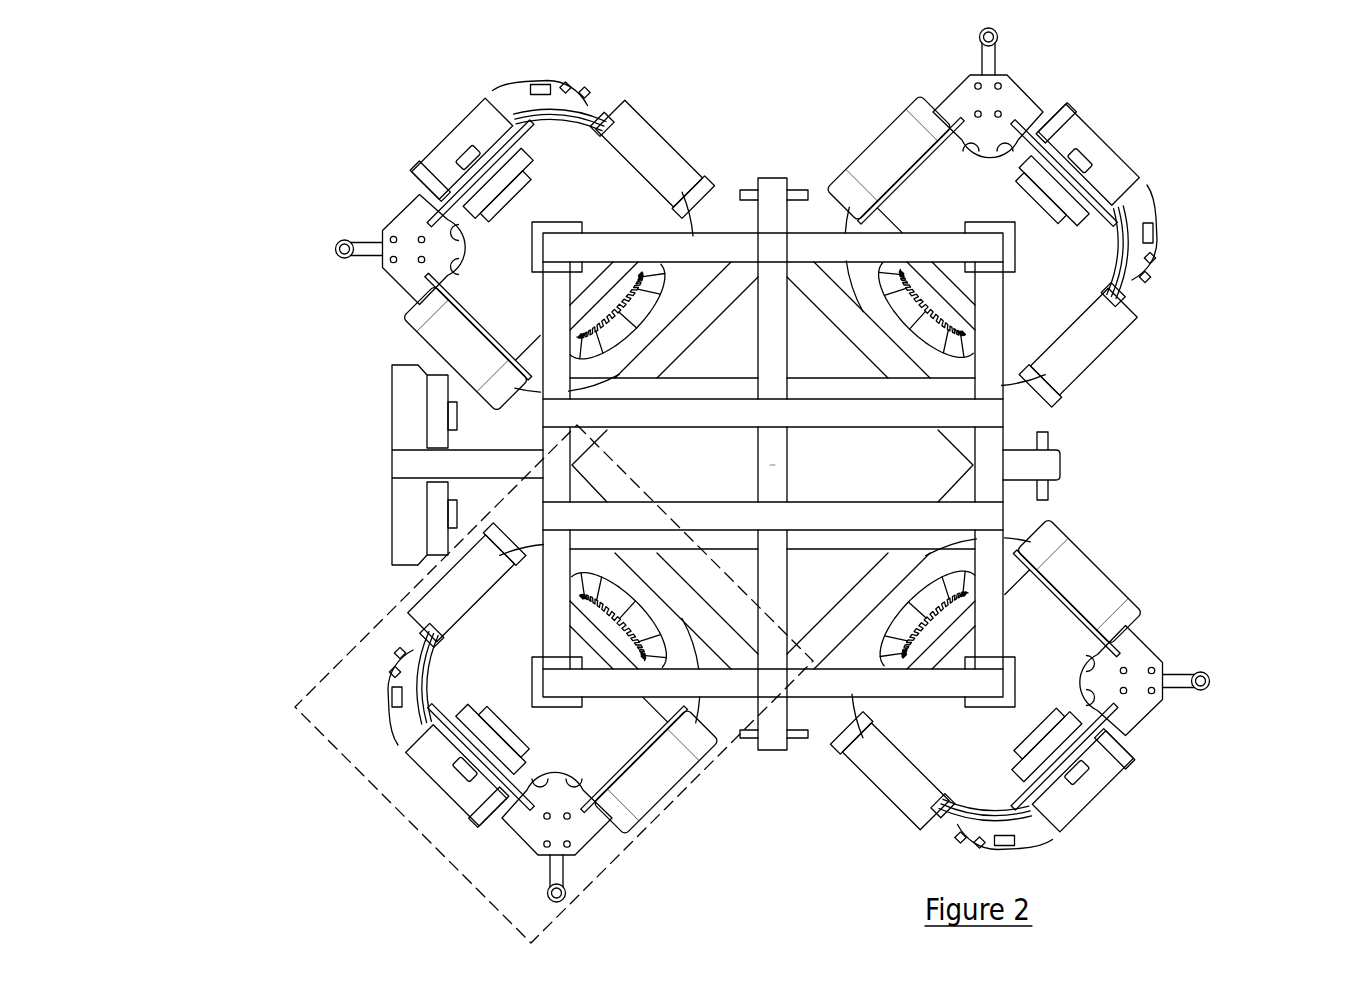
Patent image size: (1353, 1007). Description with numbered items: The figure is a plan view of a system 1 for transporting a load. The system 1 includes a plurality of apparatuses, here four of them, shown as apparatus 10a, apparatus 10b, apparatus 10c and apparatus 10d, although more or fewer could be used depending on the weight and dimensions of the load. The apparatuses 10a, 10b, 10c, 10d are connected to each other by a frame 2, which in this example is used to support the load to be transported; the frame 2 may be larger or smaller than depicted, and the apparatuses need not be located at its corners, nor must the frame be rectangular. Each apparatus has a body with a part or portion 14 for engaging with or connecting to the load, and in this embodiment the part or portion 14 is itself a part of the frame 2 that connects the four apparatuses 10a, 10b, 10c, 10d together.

The system for transporting a load 1 is at (258, 190).
The frame 2 is at (1003, 428).
The apparatus 10a is at (420, 130).
The apparatus 10b is at (353, 650).
The apparatus 10c is at (1168, 636).
The apparatus 10d is at (1170, 222).
The part or portion for engaging with or connecting to a load 14 is at (832, 710).